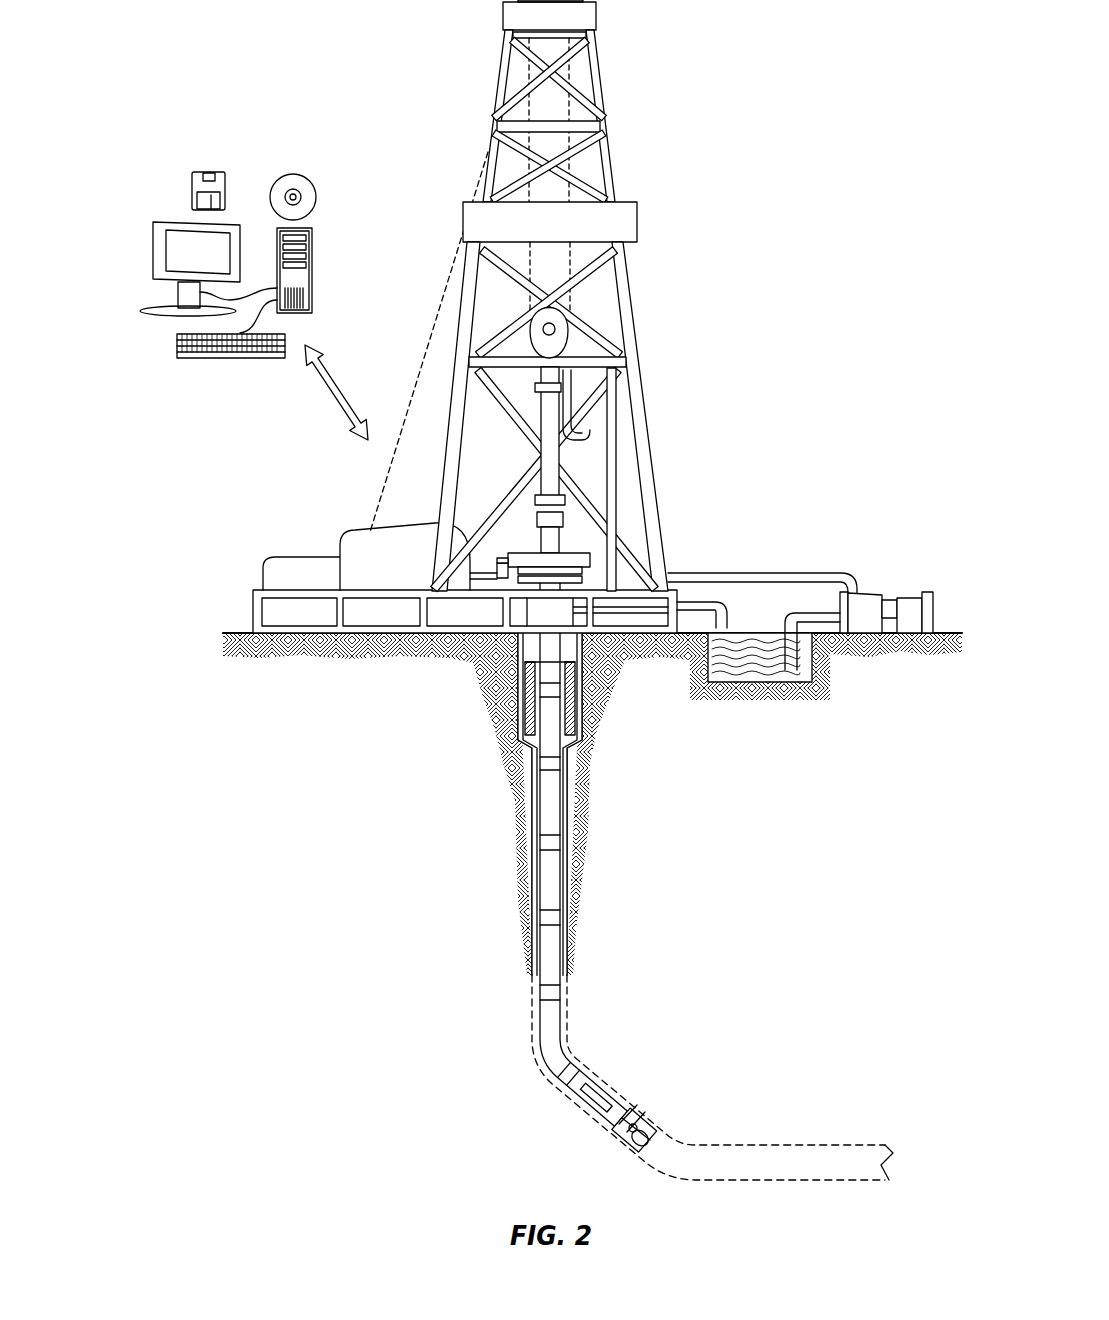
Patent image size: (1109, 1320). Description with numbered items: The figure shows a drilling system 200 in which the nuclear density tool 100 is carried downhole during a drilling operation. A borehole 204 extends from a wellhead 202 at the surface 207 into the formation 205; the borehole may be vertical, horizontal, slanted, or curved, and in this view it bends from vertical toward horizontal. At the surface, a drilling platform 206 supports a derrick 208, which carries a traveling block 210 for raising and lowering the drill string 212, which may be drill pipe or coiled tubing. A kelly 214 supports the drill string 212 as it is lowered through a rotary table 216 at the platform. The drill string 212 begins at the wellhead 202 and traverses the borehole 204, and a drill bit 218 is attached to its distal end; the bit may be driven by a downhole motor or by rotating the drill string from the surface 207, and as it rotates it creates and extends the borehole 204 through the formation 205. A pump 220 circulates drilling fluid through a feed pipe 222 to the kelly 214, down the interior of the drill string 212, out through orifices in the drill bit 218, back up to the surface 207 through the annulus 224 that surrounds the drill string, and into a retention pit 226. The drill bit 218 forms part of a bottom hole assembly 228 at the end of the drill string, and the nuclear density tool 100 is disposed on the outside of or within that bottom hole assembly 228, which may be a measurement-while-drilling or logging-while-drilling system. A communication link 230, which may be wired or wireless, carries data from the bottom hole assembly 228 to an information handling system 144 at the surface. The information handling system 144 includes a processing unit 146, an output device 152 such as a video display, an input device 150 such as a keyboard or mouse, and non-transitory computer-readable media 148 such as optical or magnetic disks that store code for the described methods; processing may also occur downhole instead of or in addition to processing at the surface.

The nuclear density tool 100 is at (595, 1103).
The information handling system 144 is at (226, 269).
The processing unit 146 is at (313, 240).
The non-transitory computer-readable media 148 is at (290, 172).
The input device 150 is at (188, 358).
The output device 152 is at (160, 260).
The drilling system 200 is at (864, 100).
The wellhead 202 is at (596, 578).
The borehole 204 is at (565, 835).
The formation 205 is at (797, 927).
The drilling platform 206 is at (253, 610).
The surface 207 is at (945, 633).
The derrick 208 is at (609, 143).
The traveling block 210 is at (572, 335).
The drill string 212 is at (555, 820).
The kelly 214 is at (550, 415).
The rotary table 216 is at (587, 548).
The drill bit 218 is at (648, 1128).
The pump 220 is at (870, 592).
The feed pipe 222 is at (787, 572).
The annulus 224 is at (535, 840).
The retention pit 226 is at (755, 668).
The bottom hole assembly 228 is at (558, 1095).
The communication link 230 is at (327, 397).